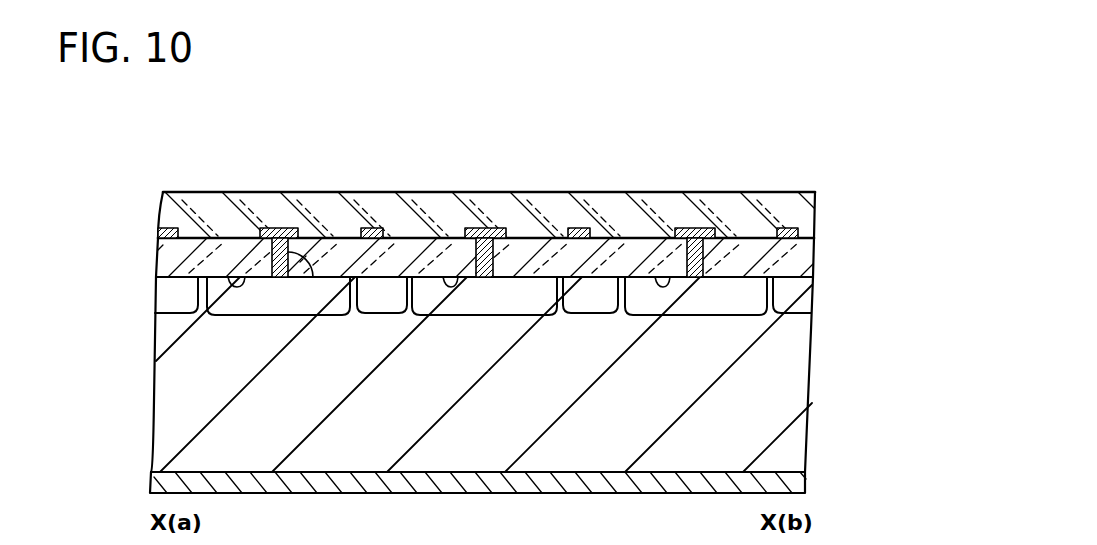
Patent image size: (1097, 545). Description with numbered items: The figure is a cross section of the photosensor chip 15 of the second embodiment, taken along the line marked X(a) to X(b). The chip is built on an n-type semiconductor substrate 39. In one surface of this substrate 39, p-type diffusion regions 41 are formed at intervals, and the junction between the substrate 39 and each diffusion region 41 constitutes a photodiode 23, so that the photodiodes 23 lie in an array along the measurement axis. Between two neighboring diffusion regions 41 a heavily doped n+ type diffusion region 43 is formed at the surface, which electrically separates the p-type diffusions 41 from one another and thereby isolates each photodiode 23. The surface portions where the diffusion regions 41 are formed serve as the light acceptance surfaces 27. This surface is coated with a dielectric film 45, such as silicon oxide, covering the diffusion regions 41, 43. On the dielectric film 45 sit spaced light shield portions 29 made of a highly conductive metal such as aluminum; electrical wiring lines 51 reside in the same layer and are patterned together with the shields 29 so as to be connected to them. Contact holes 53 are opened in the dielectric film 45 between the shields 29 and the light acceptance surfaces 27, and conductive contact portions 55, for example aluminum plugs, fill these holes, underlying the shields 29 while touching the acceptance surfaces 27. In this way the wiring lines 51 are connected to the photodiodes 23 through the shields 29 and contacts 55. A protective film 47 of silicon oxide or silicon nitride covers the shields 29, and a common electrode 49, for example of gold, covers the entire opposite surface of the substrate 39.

The photosensor chip 15 is at (495, 301).
The photodiode 23 is at (293, 322).
The light acceptance surface 27 is at (228, 277).
The light shield portion 29 is at (264, 227).
The semiconductor substrate 39 is at (804, 377).
The p-type diffusion region 41 is at (242, 306).
The n+ type diffusion region 43 is at (160, 301).
The dielectric film 45 is at (808, 256).
The protective film 47 is at (808, 214).
The common electrode 49 is at (805, 486).
The electrical wiring line 51 is at (168, 227).
The contact hole 53 is at (322, 250).
The contact portion 55 is at (309, 252).